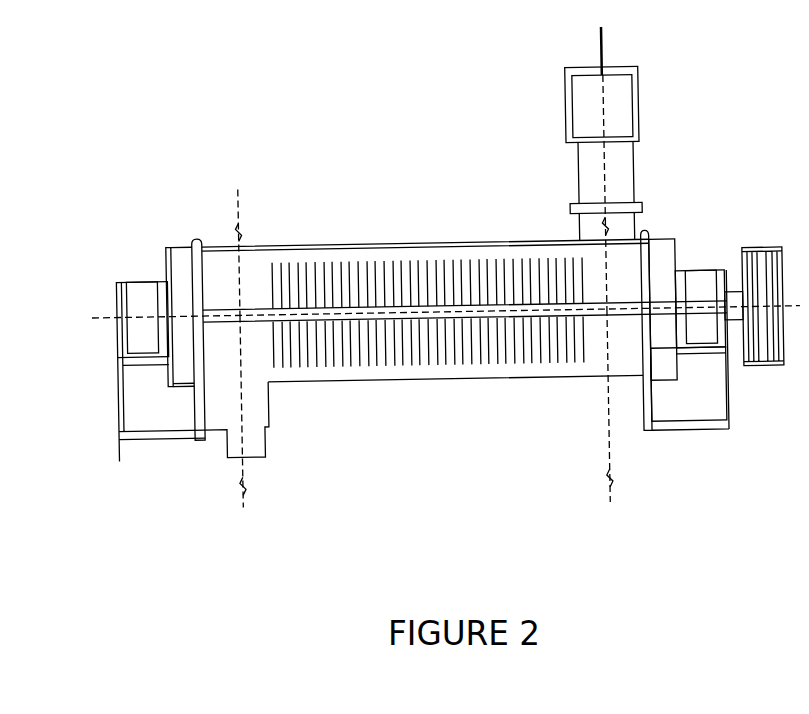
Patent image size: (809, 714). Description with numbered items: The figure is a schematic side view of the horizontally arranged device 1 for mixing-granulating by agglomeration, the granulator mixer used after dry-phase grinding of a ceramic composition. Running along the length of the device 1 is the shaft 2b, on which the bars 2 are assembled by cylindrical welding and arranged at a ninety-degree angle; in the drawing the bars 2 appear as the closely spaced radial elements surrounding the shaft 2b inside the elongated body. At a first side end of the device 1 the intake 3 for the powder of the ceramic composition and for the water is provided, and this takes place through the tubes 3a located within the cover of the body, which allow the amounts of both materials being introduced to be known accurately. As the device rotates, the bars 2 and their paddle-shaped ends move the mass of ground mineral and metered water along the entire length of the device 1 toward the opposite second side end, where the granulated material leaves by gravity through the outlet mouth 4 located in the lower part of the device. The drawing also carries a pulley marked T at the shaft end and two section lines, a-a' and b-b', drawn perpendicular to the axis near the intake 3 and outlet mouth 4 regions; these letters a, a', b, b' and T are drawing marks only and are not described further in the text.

The device for mixing-granulating by agglomeration 1 is at (129, 283).
The bars 2 is at (433, 383).
The shaft 2b is at (655, 232).
The intake 3 is at (628, 187).
The tubes 3a is at (623, 44).
The outlet mouth 4 is at (228, 462).
The pulley T is at (625, 213).
The section line a is at (614, 192).
The section line a' is at (626, 422).
The section line b is at (251, 233).
The section line b' is at (259, 429).